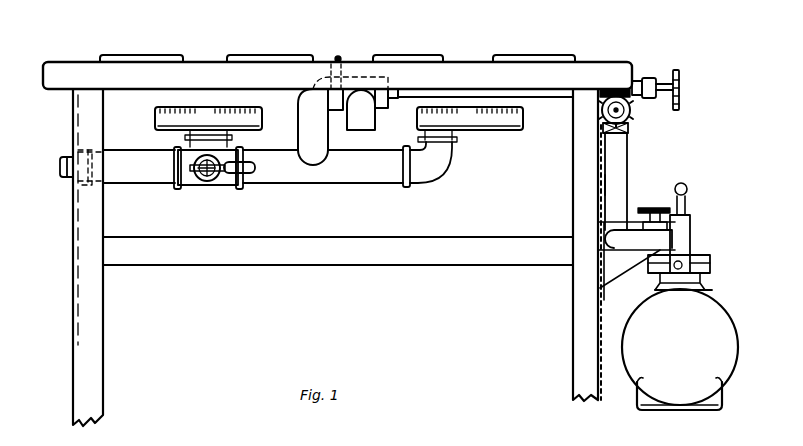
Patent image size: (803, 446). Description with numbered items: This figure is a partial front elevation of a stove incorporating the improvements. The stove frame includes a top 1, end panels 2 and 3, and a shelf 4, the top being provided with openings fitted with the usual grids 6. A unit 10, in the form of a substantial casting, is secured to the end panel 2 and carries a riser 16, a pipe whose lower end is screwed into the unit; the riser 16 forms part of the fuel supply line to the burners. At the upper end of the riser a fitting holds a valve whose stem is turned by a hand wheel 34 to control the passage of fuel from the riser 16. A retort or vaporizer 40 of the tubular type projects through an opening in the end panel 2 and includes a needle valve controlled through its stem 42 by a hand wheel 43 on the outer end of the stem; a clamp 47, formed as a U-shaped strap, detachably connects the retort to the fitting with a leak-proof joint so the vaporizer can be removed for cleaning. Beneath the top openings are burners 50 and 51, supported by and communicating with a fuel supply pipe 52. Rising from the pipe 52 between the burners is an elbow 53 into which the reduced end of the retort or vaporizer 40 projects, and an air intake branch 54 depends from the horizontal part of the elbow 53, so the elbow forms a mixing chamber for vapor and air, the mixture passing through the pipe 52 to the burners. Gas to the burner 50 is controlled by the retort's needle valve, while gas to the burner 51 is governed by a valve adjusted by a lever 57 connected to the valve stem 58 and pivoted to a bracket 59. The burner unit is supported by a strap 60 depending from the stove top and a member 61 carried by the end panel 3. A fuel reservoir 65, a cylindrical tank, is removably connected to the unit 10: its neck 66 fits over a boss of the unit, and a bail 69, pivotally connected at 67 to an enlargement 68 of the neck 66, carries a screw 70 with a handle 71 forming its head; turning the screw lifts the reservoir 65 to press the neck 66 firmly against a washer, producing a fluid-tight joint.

The top 1 is at (588, 66).
The end panel 2 is at (628, 163).
The end panel 3 is at (73, 130).
The shelf 4 is at (375, 265).
The grid 6 is at (153, 57).
The unit 10 is at (634, 246).
The riser 16 is at (620, 186).
The hand wheel 34 is at (626, 115).
The retort or vaporizer 40 is at (562, 98).
The stem 42 is at (664, 82).
The hand wheel 43 is at (681, 87).
The clamp 47 is at (632, 130).
The burner 50 is at (508, 132).
The burner 51 is at (160, 117).
The fuel supply pipe 52 is at (325, 183).
The elbow 53 is at (304, 126).
The air intake branch 54 is at (372, 118).
The lever 57 is at (244, 185).
The valve stem 58 is at (208, 186).
The bracket 59 is at (178, 185).
The strap 60 is at (345, 88).
The member 61 is at (78, 195).
The fuel reservoir 65 is at (680, 349).
The neck 66 is at (679, 290).
The pivot 67 is at (711, 265).
The enlargement 68 is at (653, 207).
The bail 69 is at (692, 228).
The screw 70 is at (686, 205).
The handle 71 is at (688, 182).